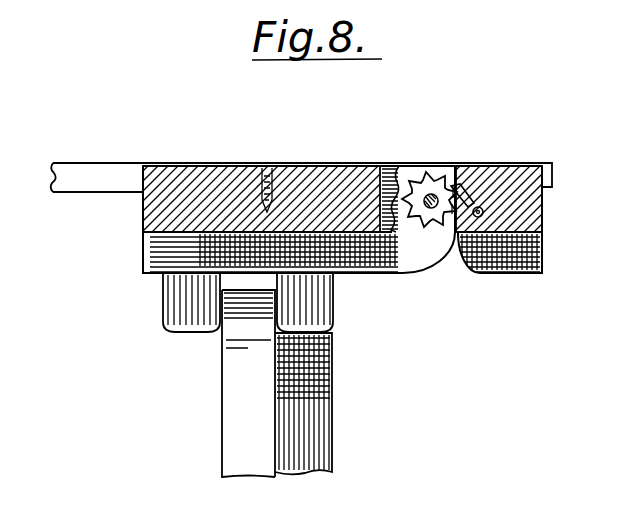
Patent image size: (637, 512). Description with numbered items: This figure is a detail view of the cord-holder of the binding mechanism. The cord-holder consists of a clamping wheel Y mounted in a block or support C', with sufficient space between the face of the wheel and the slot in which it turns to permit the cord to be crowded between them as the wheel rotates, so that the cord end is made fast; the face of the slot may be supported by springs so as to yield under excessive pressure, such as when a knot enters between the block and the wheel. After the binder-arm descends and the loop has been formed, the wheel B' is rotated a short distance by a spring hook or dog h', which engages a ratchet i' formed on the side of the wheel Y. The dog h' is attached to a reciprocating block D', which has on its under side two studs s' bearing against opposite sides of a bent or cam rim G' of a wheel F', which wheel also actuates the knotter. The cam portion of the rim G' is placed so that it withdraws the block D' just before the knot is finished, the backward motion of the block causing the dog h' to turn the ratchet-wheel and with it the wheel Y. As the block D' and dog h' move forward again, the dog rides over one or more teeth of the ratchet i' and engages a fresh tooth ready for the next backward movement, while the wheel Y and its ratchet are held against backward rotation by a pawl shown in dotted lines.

The reciprocating block D' is at (260, 186).
The spring hook or dog h' is at (384, 188).
The wheel B' is at (429, 184).
The ratchet i' is at (467, 177).
The block or support C' is at (497, 208).
The clamping wheel or cord-holder Y is at (288, 253).
The studs s' is at (250, 302).
The bent or cam rim G' is at (248, 383).
The wheel F' is at (303, 403).